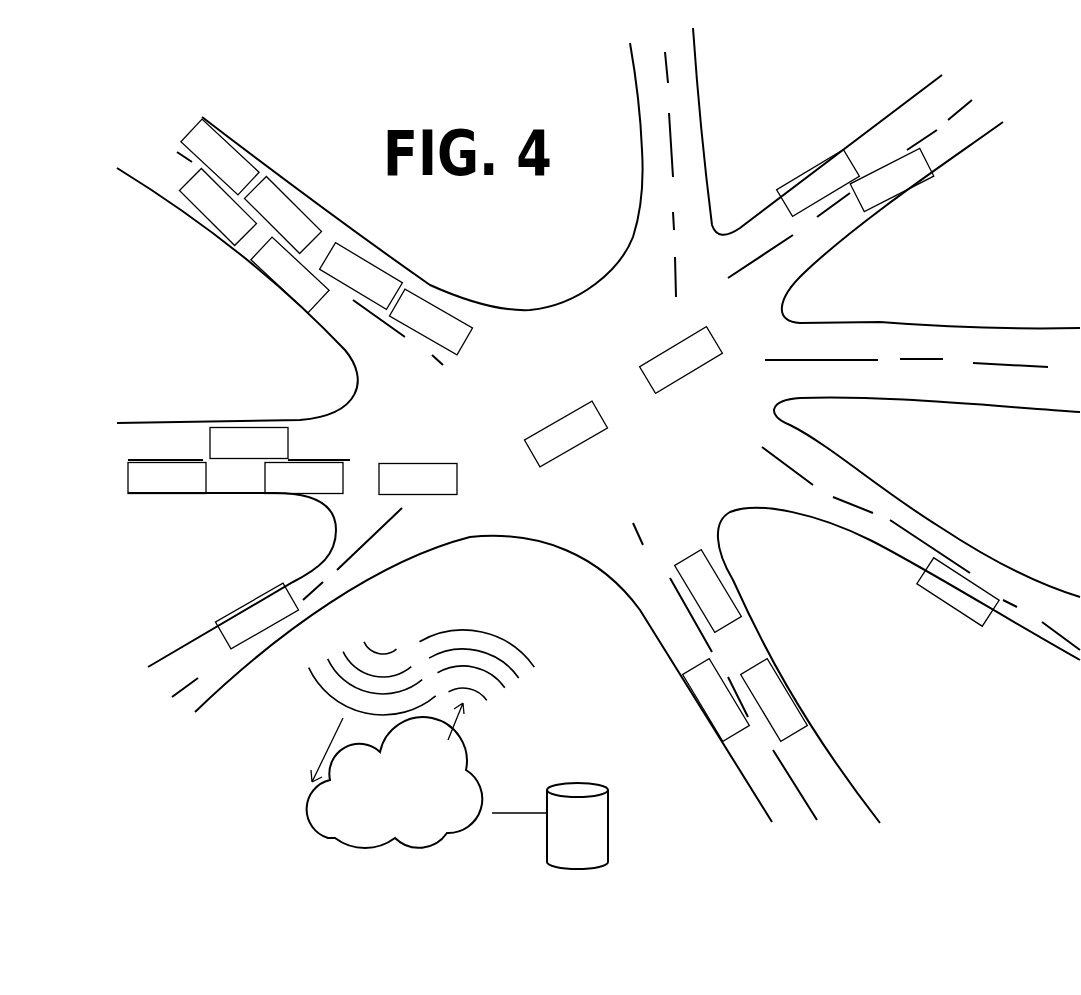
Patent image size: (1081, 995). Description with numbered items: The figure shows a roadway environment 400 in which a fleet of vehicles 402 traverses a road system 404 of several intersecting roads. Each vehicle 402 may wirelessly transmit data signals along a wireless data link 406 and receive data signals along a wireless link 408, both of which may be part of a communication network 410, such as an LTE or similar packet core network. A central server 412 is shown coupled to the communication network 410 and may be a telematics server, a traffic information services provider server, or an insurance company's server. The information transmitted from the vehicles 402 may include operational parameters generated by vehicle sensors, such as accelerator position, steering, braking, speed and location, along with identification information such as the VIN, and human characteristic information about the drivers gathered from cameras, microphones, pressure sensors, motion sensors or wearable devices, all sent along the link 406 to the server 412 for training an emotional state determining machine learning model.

The roadway environment 400 is at (378, 107).
The vehicle 402 is at (563, 430).
The road system 404 is at (770, 562).
The wireless data link 406 is at (372, 703).
The wireless link 408 is at (477, 671).
The communication network 410 is at (395, 782).
The central server 412 is at (550, 826).